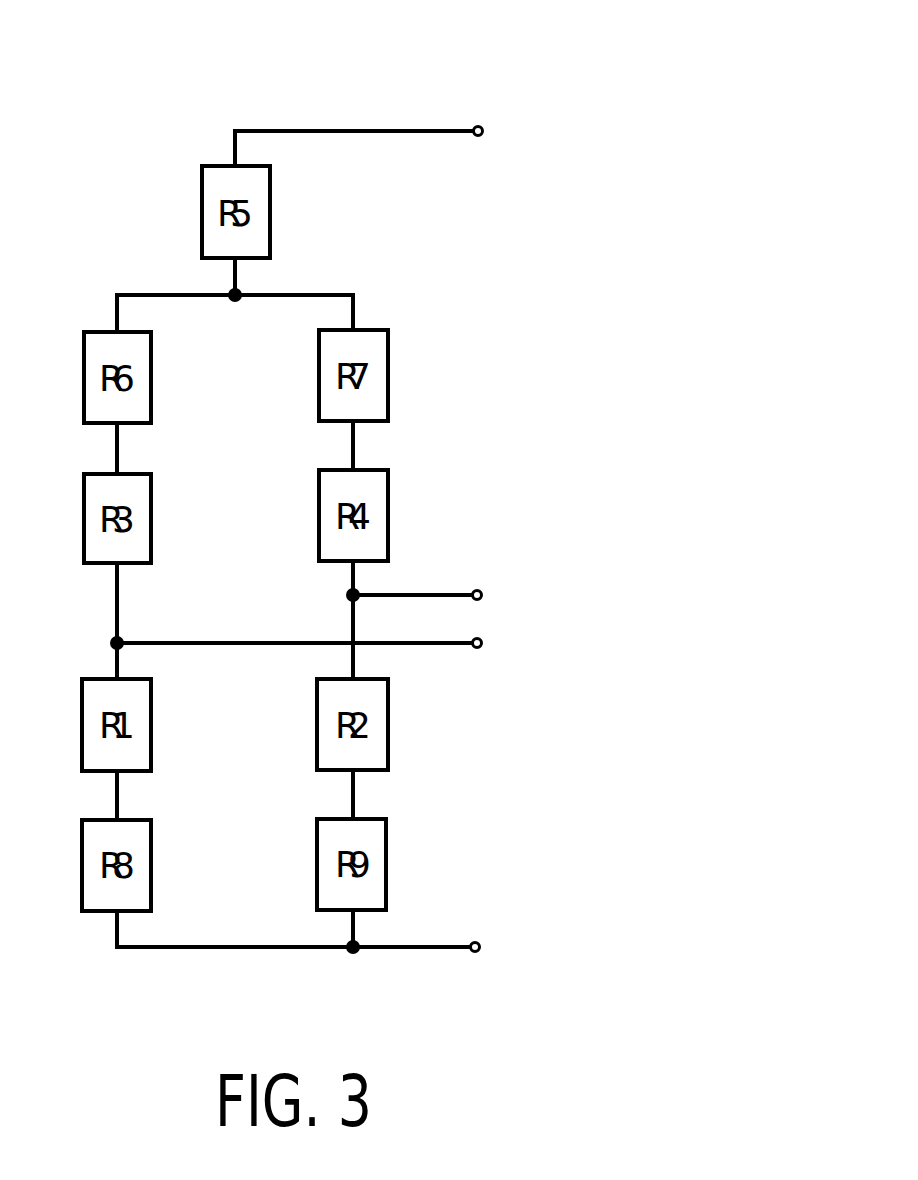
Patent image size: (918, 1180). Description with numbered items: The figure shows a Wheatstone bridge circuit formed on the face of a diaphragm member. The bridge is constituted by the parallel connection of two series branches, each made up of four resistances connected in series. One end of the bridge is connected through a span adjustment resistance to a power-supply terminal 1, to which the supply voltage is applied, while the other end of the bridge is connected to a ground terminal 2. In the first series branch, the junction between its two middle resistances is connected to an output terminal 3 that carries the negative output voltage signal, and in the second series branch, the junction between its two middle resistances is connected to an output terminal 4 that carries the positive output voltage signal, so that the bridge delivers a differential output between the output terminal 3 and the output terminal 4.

The power-supply terminal 1 is at (478, 126).
The ground terminal 2 is at (475, 941).
The output terminal for –OUT voltage signal 3 is at (477, 648).
The output terminal for +OUT voltage signal 4 is at (476, 590).